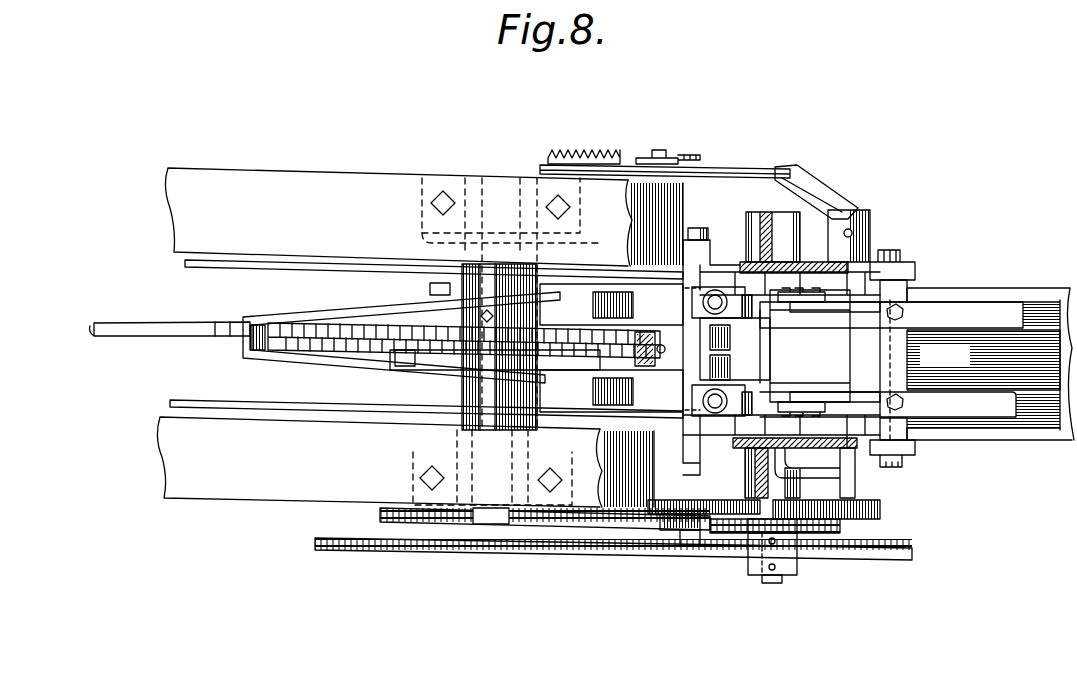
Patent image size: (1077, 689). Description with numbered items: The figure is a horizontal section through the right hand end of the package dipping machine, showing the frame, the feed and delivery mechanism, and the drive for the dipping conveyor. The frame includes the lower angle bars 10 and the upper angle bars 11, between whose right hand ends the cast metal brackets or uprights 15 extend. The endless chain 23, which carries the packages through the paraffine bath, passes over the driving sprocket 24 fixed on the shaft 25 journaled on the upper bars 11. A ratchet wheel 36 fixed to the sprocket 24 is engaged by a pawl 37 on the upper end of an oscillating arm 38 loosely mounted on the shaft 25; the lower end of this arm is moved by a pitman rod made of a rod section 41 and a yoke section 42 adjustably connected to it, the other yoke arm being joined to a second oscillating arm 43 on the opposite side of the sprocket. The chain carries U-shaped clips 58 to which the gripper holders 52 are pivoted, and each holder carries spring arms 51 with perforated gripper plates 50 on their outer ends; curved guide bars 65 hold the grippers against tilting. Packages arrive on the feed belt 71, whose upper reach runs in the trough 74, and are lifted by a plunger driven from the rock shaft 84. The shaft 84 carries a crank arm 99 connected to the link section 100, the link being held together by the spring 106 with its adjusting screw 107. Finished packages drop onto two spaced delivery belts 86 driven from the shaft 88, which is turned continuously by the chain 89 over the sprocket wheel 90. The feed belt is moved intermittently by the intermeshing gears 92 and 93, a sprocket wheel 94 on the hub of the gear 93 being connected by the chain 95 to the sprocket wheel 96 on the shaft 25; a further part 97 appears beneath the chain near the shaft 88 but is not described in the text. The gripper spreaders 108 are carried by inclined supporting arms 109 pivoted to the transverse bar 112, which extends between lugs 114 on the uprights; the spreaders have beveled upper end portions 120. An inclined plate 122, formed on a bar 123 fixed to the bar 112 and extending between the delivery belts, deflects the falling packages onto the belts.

The lower angle bars 10 is at (697, 196).
The upper angle bars 11 is at (345, 192).
The brackets or uprights 15 is at (802, 265).
The endless chain 23 is at (586, 332).
The driving sprocket 24 is at (328, 333).
The shaft 25 is at (420, 242).
The ratchet wheel 36 is at (408, 355).
The pawl 37 is at (562, 371).
The oscillating arm 38 is at (488, 400).
The rod section 41 is at (157, 337).
The yoke section 42 is at (292, 317).
The oscillating arm 43 is at (430, 291).
The gripper plates 50 is at (812, 302).
The spring arms 51 is at (730, 296).
The gripper supports or holders 52 is at (685, 312).
The U-shaped clips 58 is at (644, 362).
The guide straps or bars 65 is at (198, 400).
The feeding carrier or belt 71 is at (1030, 314).
The trough 74 is at (1030, 437).
The rock shaft 84 is at (858, 210).
The delivery belts 86 is at (972, 318).
The shaft 88 is at (772, 583).
The chain 89 is at (573, 552).
The sprocket wheel 90 is at (798, 568).
The gear 92 is at (660, 498).
The gear 93 is at (880, 511).
The sprocket wheel 94 is at (830, 535).
The chain 95 is at (616, 526).
The sprocket wheel 96 is at (512, 536).
The gear support 97 is at (690, 548).
The crank arm 99 is at (820, 186).
The link section 100 is at (752, 181).
The spring 106 is at (606, 150).
The adjusting screw 107 is at (668, 158).
The gripper spreaders 108 is at (605, 296).
The supporting arms 109 is at (781, 351).
The transverse bar 112 is at (905, 296).
The lugs 114 is at (897, 277).
The beveled upper end portions 120 is at (754, 380).
The inclined plate 122 is at (792, 395).
The bar 123 is at (983, 360).